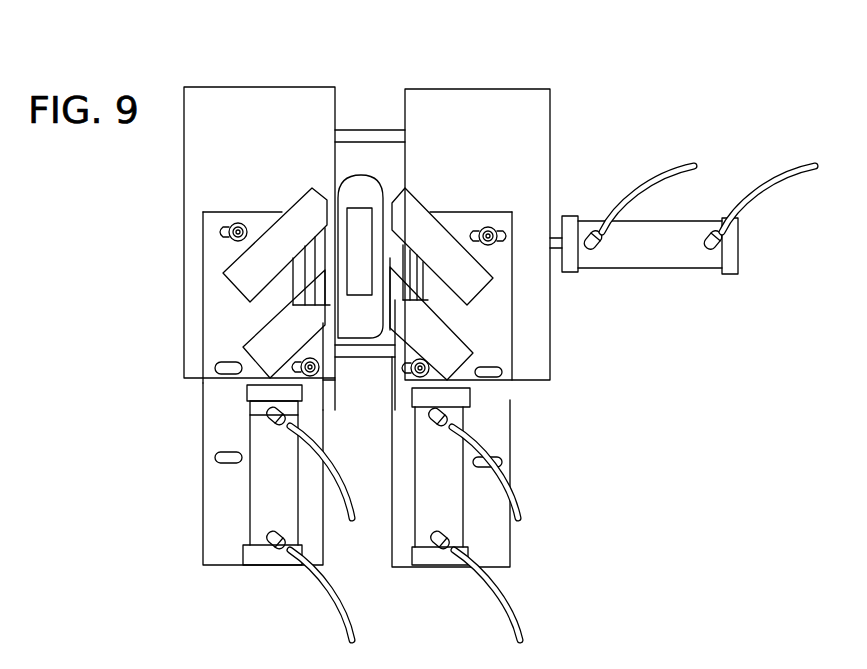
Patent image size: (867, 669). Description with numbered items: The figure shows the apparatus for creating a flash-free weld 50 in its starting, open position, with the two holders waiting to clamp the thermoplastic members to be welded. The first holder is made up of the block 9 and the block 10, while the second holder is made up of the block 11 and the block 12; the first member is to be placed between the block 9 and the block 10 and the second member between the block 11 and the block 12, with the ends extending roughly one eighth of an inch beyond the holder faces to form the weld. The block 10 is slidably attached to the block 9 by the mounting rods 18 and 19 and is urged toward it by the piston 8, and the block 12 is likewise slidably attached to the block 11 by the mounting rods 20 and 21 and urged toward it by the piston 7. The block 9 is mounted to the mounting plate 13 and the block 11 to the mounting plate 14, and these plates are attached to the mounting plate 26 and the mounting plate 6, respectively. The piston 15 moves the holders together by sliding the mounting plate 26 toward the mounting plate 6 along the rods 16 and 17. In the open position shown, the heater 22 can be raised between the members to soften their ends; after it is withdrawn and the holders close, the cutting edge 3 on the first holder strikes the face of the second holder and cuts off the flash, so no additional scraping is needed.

The cutting edge 3 is at (393, 190).
The mounting plate 6 is at (253, 108).
The piston 7 is at (258, 517).
The piston 8 is at (430, 525).
The block 9 is at (423, 225).
The block 10 is at (445, 357).
The block 11 is at (288, 237).
The block 12 is at (268, 350).
The mounting plate 13 is at (492, 537).
The mounting plate 14 is at (223, 490).
The piston 15 is at (678, 230).
The rod 16 is at (359, 130).
The rod 17 is at (368, 356).
The mounting rod 18 is at (403, 263).
The mounting rod 19 is at (425, 285).
The mounting rod 20 is at (305, 268).
The mounting rod 21 is at (287, 290).
The heater 22 is at (363, 183).
The mounting plate 26 is at (536, 105).
The apparatus for creating a flash-free weld 50 is at (585, 459).